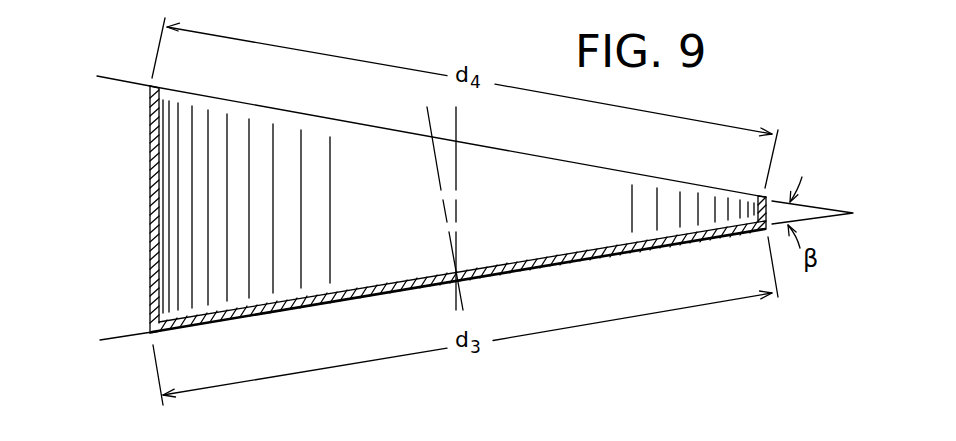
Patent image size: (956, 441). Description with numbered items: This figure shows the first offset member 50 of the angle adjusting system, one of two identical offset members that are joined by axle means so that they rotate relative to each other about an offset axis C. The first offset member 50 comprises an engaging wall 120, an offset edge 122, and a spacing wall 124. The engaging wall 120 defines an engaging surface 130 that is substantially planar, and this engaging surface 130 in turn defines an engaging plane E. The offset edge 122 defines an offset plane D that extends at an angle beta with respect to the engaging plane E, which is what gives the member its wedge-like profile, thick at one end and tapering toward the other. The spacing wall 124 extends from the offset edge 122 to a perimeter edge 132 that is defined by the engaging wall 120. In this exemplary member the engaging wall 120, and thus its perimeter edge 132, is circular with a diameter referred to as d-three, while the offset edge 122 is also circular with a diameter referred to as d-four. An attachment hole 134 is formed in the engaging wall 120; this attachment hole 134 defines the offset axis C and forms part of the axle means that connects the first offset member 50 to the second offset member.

The first offset member 50 is at (787, 155).
The engaging wall 120 is at (292, 305).
The offset edge 122 is at (267, 108).
The spacing wall 124 is at (150, 171).
The engaging surface 130 is at (645, 250).
The perimeter edge 132 is at (150, 335).
The attachment hole 134 is at (498, 268).
The offset plane D is at (118, 77).
The engaging plane E is at (118, 337).
The offset axis C is at (427, 127).